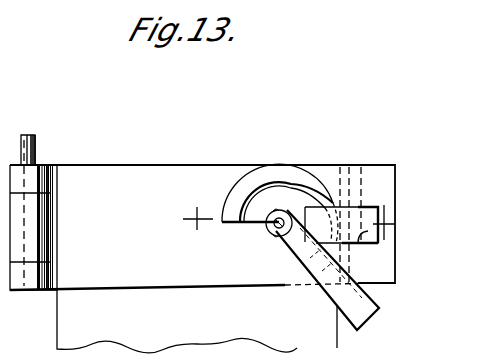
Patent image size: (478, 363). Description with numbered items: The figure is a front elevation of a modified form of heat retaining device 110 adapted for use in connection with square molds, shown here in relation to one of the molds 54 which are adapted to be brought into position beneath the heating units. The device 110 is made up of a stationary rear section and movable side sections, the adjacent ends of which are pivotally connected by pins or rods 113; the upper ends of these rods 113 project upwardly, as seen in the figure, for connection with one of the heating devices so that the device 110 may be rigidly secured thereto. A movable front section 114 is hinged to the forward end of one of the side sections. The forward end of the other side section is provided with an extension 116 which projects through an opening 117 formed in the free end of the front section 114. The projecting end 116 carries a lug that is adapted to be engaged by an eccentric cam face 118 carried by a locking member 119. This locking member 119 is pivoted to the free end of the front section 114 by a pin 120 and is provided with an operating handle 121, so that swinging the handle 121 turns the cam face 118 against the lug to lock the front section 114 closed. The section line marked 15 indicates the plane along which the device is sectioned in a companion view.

The heat retaining device 110 is at (154, 160).
The pins or rods 113 is at (37, 158).
The movable front section 114 is at (55, 227).
The section line 15- 15 is at (289, 212).
The locking member 119 is at (260, 171).
The eccentric cam face 118 is at (291, 184).
The opening 117 is at (357, 205).
The pin 120 is at (272, 231).
The extension 116 is at (350, 241).
The operating handle 121 is at (347, 313).
The molds 54 is at (57, 327).